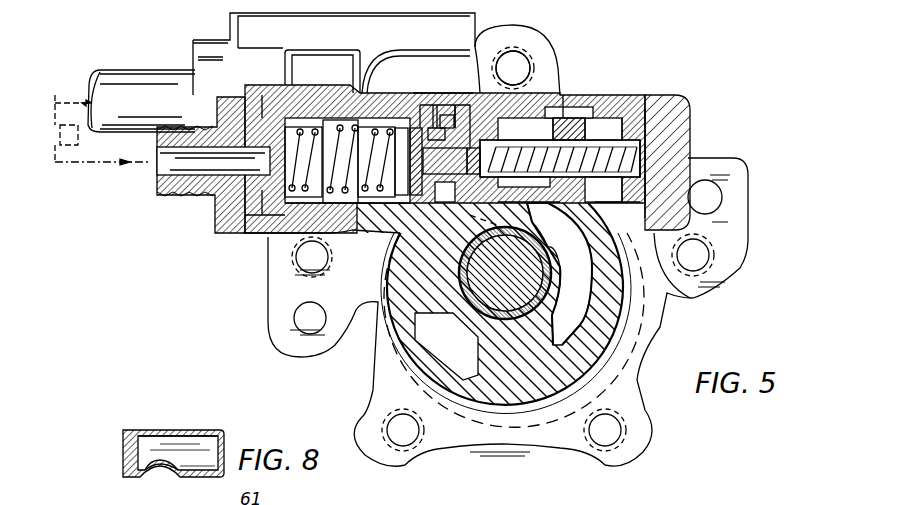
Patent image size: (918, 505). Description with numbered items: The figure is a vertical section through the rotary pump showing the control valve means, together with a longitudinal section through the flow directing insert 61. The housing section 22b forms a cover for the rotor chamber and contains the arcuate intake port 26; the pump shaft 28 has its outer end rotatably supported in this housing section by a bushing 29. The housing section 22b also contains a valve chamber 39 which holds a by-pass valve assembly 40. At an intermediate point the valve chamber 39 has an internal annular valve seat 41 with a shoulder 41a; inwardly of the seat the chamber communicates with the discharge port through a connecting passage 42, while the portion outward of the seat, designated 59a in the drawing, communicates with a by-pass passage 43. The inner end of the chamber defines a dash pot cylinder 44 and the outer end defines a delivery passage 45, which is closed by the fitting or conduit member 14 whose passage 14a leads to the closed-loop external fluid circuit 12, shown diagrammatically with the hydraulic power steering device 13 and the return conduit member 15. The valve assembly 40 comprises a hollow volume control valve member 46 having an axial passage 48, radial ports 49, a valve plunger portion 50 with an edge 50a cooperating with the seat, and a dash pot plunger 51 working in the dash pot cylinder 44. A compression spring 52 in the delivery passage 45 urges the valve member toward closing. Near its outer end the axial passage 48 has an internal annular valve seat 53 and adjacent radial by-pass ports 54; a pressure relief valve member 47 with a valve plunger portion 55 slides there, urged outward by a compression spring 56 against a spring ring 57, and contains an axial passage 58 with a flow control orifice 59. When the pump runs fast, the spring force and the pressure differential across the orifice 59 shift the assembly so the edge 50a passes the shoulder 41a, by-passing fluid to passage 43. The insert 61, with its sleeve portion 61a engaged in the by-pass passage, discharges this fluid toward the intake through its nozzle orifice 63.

In FIG. 5, the external fluid circuit 12 is at (95, 168).
In FIG. 5, the hydraulic power steering device 13 is at (70, 117).
In FIG. 5, the delivery conduit member 14 is at (220, 218).
In FIG. 5, the passage 14a is at (182, 165).
In FIG. 5, the return conduit member 15 is at (137, 80).
In FIG. 5, the housing section 22b is at (640, 345).
In FIG. 5, the intake port 26 is at (470, 363).
In FIG. 5, the shaft 28 is at (490, 325).
In FIG. 5, the bushing 29 is at (570, 274).
In FIG. 5, the valve chamber 39 is at (615, 112).
In FIG. 5, the by-pass valve assembly 40 is at (637, 96).
In FIG. 5, the internal annular valve seat 41 is at (570, 118).
In FIG. 5, the shoulder 41a is at (483, 93).
In FIG. 5, the connecting passage 42 is at (615, 205).
In FIG. 5, the by-pass passage 43 is at (418, 118).
In FIG. 5, the dash pot cylinder 44 is at (680, 96).
In FIG. 5, the delivery passage 45 is at (334, 54).
In FIG. 5, the volume control valve member 46 is at (590, 130).
In FIG. 5, the pressure relief valve member 47 is at (455, 103).
In FIG. 5, the axial passage 48 is at (558, 195).
In FIG. 5, the radial ports 49 is at (540, 205).
In FIG. 5, the valve plunger portion 50 is at (495, 80).
In FIG. 5, the edge 50a is at (545, 112).
In FIG. 5, the dash pot plunger 51 is at (660, 105).
In FIG. 5, the compression spring 52 is at (345, 128).
In FIG. 5, the internal annular valve seat 53 is at (390, 172).
In FIG. 5, the radial by-pass ports 54 is at (450, 115).
In FIG. 5, the valve plunger portion 55 is at (437, 103).
In FIG. 5, the compression spring 56 is at (660, 160).
In FIG. 5, the spring ring 57 is at (330, 205).
In FIG. 5, the axial passage 58 is at (448, 132).
In FIG. 5, the flow control orifice 59 is at (472, 200).
In FIG. 5, the passage 59a is at (392, 92).
In FIG. 8, the insert 61 is at (120, 440).
In FIG. 8, the sleeve portion 61a is at (188, 430).
In FIG. 8, the nozzle orifice 63 is at (155, 474).